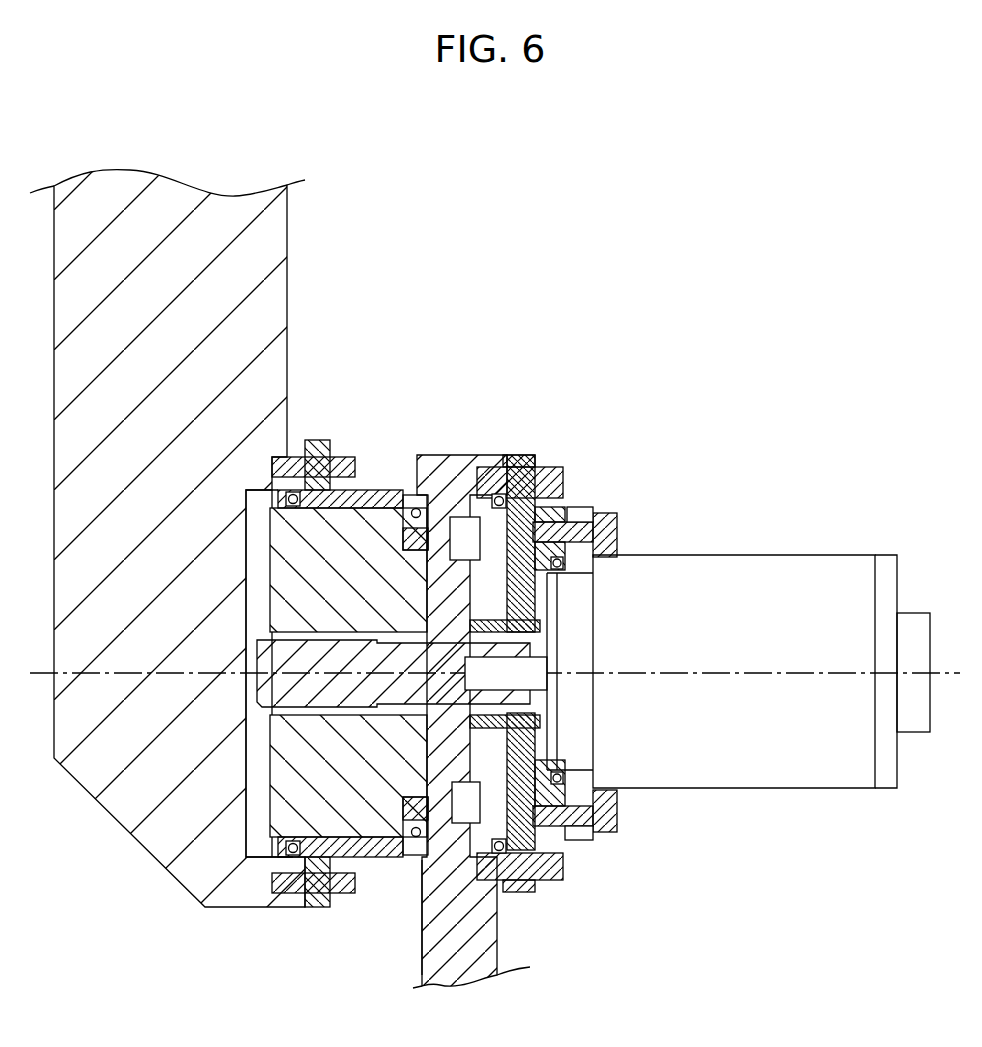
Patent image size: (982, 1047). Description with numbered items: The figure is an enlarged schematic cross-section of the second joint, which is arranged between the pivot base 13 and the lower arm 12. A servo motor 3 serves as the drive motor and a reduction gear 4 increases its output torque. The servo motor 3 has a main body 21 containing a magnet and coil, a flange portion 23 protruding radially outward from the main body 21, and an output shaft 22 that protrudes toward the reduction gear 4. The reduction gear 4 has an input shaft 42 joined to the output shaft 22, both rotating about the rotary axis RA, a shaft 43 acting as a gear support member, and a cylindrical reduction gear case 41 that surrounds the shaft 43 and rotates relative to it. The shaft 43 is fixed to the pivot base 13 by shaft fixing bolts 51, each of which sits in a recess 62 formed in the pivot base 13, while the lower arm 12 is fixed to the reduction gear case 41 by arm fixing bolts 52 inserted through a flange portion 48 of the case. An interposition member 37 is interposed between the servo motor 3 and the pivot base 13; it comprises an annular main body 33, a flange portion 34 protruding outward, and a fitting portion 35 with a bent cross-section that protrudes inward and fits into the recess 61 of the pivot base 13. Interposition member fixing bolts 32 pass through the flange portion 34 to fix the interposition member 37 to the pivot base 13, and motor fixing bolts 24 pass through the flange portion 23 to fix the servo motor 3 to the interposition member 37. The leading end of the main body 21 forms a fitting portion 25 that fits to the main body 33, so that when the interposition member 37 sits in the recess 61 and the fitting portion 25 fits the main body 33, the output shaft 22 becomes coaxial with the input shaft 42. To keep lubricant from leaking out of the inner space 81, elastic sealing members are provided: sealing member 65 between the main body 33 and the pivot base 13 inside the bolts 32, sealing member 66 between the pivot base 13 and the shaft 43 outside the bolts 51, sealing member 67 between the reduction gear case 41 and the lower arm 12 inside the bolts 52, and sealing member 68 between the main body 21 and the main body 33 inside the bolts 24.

The servo motor 3 is at (745, 636).
The reduction gear 4 is at (365, 478).
The lower arm 12 is at (85, 348).
The pivot base 13 is at (440, 957).
The main body 21 is at (842, 577).
The output shaft 22 is at (560, 720).
The flange portion 23 is at (588, 507).
The motor fixing bolts 24 is at (612, 520).
The fitting portion 25 is at (540, 683).
The interposition member fixing bolts 32 is at (538, 468).
The main body 33 is at (562, 806).
The flange portion 34 is at (545, 830).
The fitting portion 35 is at (520, 896).
The interposition member 37 is at (538, 682).
The reduction gear case 41 is at (385, 488).
The input shaft 42 is at (246, 800).
The shaft 43 is at (314, 905).
The flange portion 48 is at (318, 440).
The shaft fixing bolts 51 is at (449, 516).
The arm fixing bolts 52 is at (345, 455).
The recess 61 is at (426, 858).
The recess 62 is at (458, 850).
The sealing member 65 is at (497, 492).
The sealing member 66 is at (413, 506).
The sealing member 67 is at (292, 492).
The sealing member 68 is at (567, 572).
The inner space 81 is at (553, 612).
The rotary axis RA is at (910, 670).